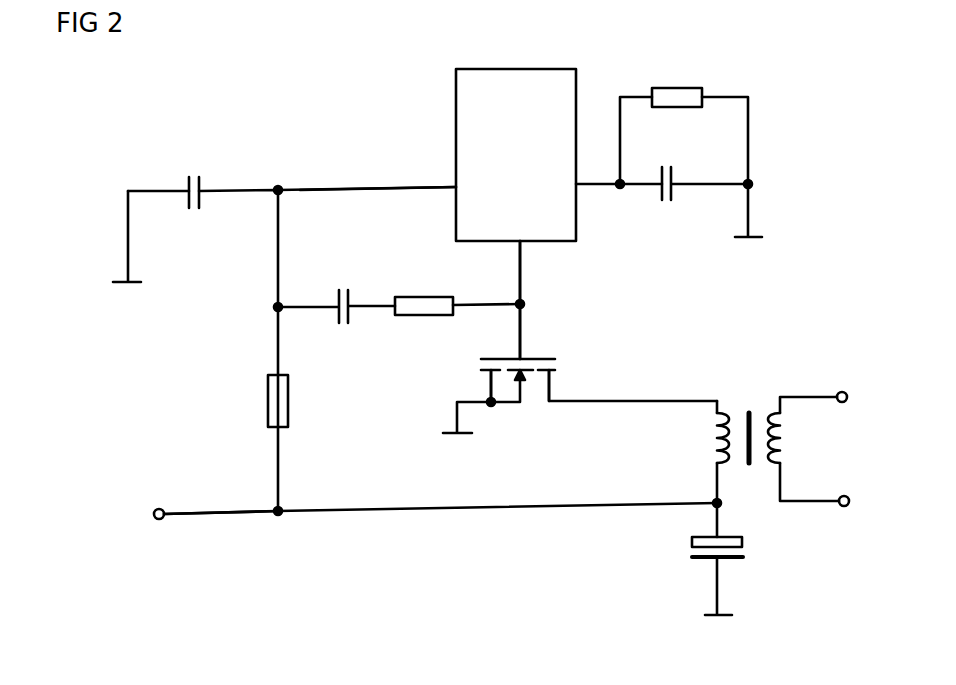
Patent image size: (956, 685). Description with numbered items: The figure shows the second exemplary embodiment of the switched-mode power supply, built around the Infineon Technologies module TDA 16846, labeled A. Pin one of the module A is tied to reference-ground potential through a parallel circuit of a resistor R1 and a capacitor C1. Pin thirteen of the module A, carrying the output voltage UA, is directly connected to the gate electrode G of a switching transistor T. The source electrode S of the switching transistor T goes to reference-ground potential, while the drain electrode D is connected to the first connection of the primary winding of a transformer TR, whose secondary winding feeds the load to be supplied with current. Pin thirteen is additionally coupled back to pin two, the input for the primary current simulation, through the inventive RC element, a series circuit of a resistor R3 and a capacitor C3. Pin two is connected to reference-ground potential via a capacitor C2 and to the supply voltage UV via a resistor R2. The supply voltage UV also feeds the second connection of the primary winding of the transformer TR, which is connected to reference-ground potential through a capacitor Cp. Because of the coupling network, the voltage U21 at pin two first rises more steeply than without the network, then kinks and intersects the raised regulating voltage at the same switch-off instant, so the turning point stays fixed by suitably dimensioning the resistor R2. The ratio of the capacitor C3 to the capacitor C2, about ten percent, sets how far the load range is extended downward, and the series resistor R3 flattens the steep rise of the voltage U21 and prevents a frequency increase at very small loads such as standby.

The module TDA 16846 A is at (516, 136).
The capacitor C1 is at (707, 205).
The capacitor C2 is at (197, 176).
The capacitor C3 is at (336, 328).
The resistor R1 is at (684, 117).
The resistor R2 is at (257, 401).
The resistor R3 is at (457, 325).
The capacitor Cp is at (747, 559).
The switching transistor T is at (580, 371).
The gate electrode G is at (500, 331).
The source electrode S is at (491, 404).
The drain electrode D is at (559, 404).
The transformer TR is at (783, 424).
The supply voltage UV is at (210, 495).
The output voltage UA (pin 13) UA is at (546, 272).
The voltage at pin 2 U21 is at (378, 165).